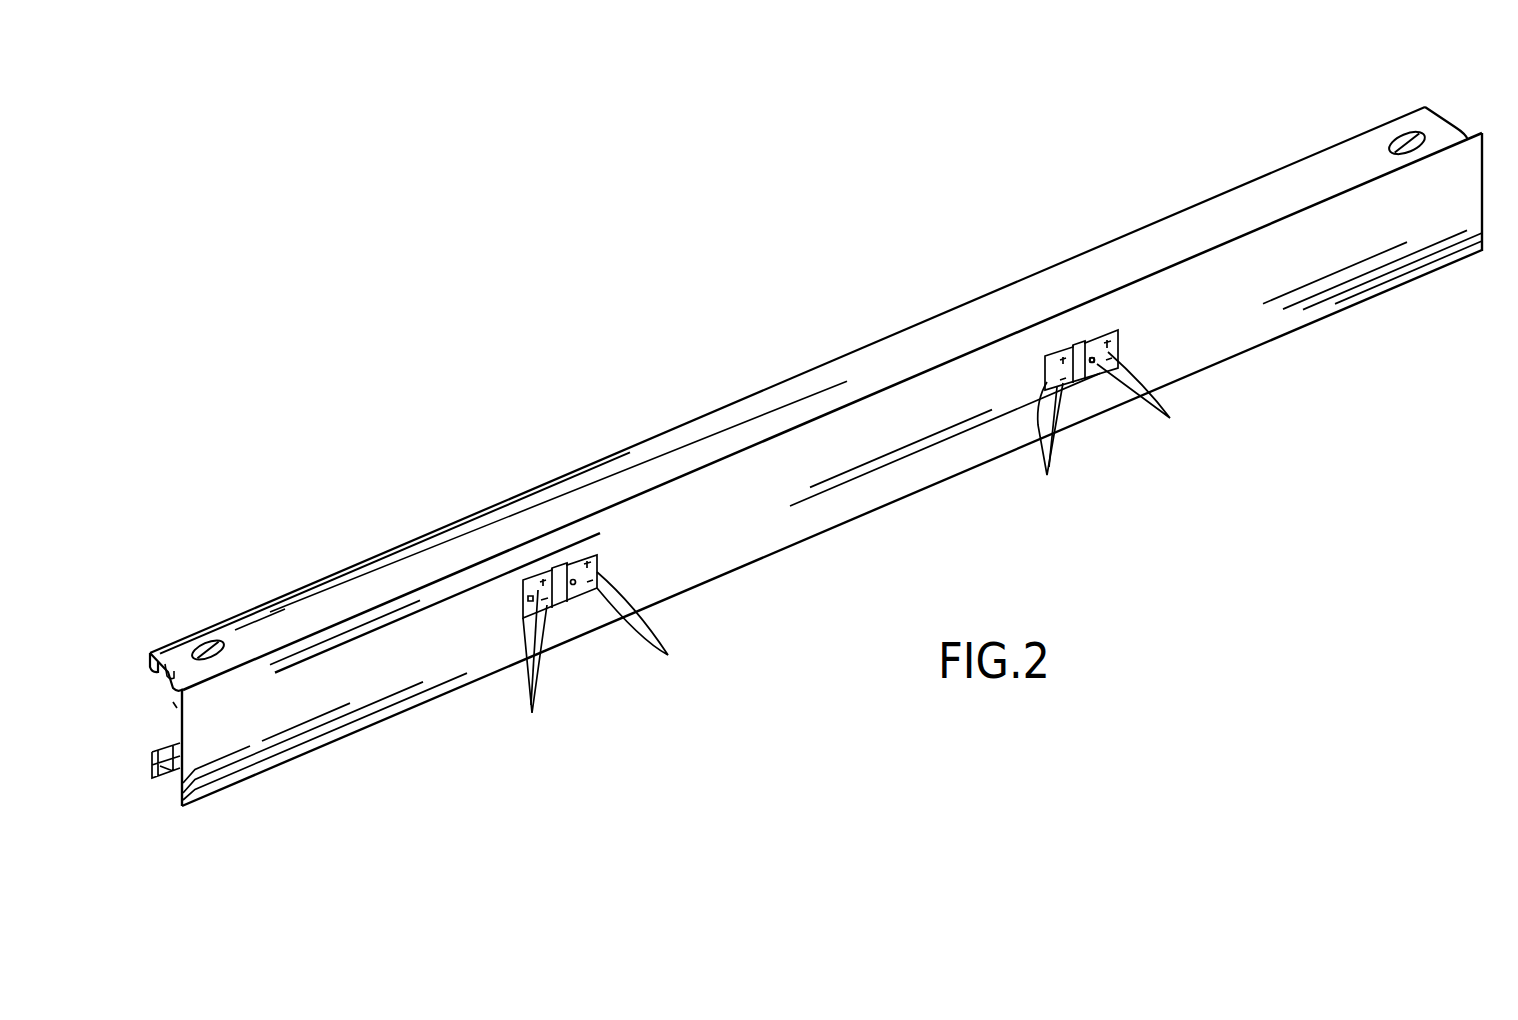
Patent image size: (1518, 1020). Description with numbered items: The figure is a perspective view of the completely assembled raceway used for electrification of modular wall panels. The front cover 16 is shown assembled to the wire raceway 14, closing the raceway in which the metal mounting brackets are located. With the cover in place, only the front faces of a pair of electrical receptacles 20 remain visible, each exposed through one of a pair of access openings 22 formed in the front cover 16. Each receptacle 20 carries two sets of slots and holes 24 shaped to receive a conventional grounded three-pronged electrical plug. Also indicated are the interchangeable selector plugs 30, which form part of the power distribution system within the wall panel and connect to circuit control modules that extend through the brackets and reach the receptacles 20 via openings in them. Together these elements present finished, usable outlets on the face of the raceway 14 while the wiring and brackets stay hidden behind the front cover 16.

The wire raceway 14 is at (855, 368).
The front cover 16 is at (848, 490).
The electrical connector or receptacle 20 is at (862, 469).
The access openings 22 is at (568, 602).
The slots and holes 24 is at (1176, 419).
The interchangeable selector plugs 30 is at (558, 575).